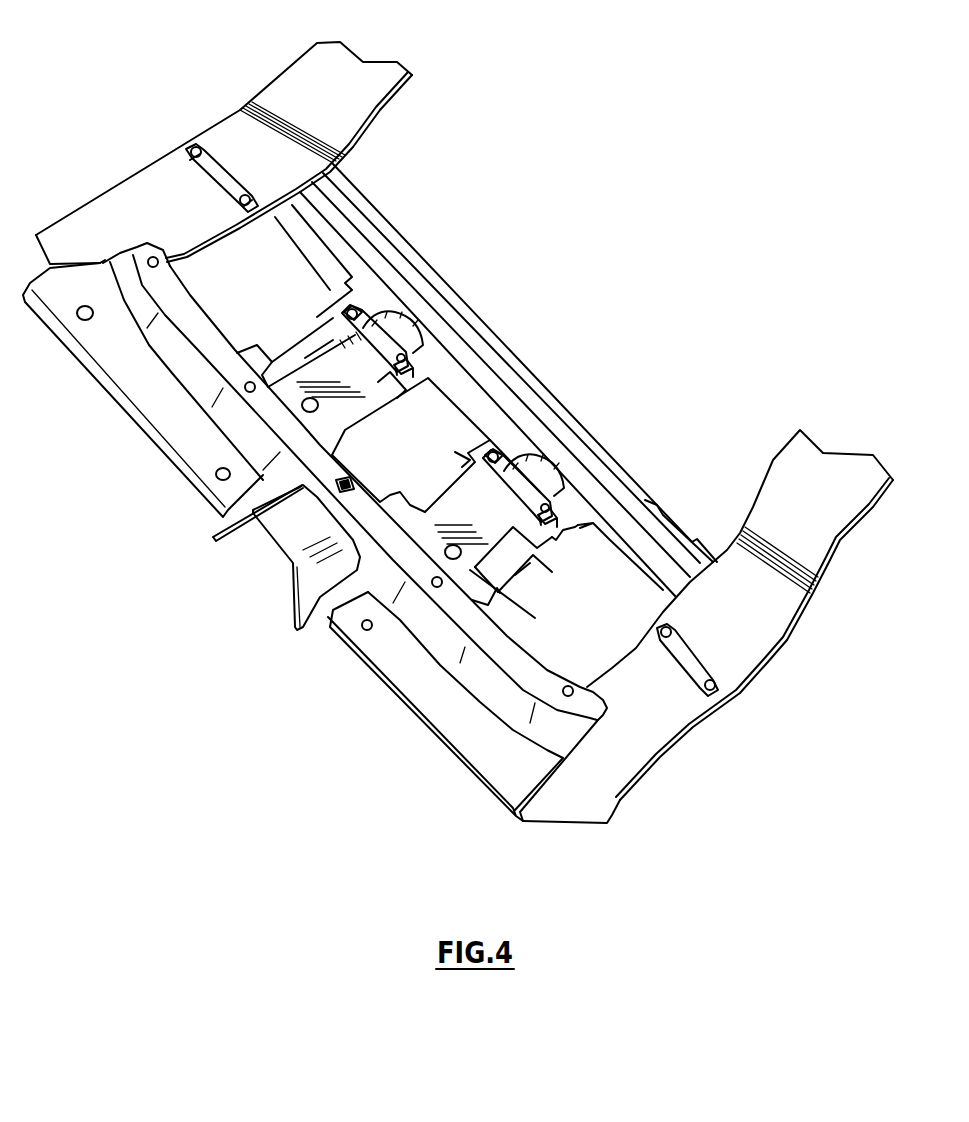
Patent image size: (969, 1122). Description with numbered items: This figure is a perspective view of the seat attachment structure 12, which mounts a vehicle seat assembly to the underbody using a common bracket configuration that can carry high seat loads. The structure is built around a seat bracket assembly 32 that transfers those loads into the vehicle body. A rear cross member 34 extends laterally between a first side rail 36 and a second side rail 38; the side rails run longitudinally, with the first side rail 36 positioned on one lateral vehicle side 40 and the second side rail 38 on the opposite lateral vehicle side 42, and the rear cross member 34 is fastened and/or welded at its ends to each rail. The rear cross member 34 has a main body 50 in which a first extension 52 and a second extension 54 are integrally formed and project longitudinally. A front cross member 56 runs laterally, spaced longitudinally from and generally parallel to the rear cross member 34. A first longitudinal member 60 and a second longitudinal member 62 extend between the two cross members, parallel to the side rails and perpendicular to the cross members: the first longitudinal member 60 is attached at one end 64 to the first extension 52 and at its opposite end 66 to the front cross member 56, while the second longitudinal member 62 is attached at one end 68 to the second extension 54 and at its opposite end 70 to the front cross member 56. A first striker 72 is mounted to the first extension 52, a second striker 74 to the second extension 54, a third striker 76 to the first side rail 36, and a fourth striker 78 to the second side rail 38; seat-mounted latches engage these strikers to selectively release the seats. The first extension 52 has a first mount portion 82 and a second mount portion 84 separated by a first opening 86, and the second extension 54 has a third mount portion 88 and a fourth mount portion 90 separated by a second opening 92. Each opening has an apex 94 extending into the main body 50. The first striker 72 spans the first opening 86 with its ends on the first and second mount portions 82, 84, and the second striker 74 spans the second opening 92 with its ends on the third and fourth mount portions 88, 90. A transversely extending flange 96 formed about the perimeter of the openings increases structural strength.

The seat attachment structure 12 is at (133, 108).
The seat bracket assembly 32 is at (596, 388).
The rear cross member 34 is at (643, 488).
The first side rail 36 is at (300, 85).
The second side rail 38 is at (813, 543).
The lateral vehicle side 40 is at (416, 54).
The opposite lateral vehicle side 42 is at (846, 430).
The main body 50 is at (460, 380).
The first extension 52 is at (385, 403).
The second extension 54 is at (537, 557).
The front cross member 56 is at (425, 628).
The first longitudinal member 60 is at (297, 347).
The second longitudinal member 62 is at (495, 570).
The one end of first longitudinal member 64 is at (320, 340).
The opposite end of first longitudinal member 66 is at (242, 347).
The one end of second longitudinal member 68 is at (527, 563).
The opposite end of second longitudinal member 70 is at (490, 593).
The first striker 72 is at (373, 317).
The second striker 74 is at (512, 460).
The third striker 76 is at (215, 177).
The fourth striker 78 is at (683, 650).
The first mount portion 82 is at (330, 307).
The second mount portion 84 is at (397, 383).
The first opening 86 is at (407, 320).
The third mount portion 88 is at (470, 460).
The fourth mount portion 90 is at (543, 528).
The second opening 92 is at (560, 477).
The apex 94 is at (430, 330).
The transversely extending flange 96 is at (365, 343).